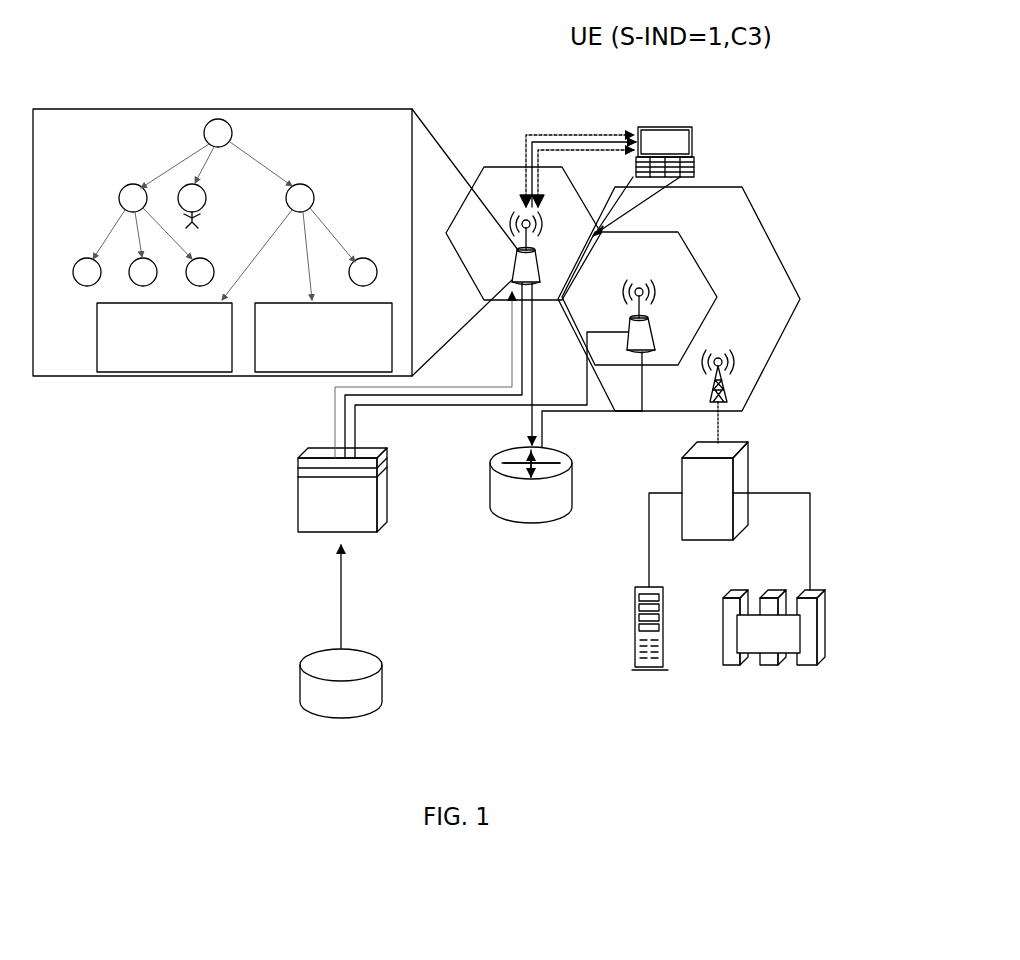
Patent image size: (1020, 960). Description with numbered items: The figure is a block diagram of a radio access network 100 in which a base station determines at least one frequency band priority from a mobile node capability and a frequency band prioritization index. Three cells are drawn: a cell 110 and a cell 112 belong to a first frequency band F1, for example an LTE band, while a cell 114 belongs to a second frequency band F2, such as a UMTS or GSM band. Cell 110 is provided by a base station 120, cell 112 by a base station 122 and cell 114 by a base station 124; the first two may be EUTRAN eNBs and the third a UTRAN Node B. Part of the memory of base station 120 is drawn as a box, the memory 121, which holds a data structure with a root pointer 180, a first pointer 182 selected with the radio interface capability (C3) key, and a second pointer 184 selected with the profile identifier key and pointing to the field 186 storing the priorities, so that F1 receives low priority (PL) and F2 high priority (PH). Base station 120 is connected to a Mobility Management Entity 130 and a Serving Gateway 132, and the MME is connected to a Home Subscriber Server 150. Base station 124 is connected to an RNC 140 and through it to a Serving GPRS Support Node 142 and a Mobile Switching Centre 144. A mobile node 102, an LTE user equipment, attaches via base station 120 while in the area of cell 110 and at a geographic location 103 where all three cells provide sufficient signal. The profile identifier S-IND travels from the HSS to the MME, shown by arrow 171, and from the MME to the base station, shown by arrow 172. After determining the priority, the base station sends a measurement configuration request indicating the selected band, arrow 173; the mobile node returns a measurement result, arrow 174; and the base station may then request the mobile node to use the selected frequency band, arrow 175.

The wireless communication system 100 is at (91, 62).
The mobile node 102 is at (665, 127).
The geographic location 103 is at (595, 240).
The cell 110 is at (456, 252).
The cell 112 is at (716, 284).
The cell 114 is at (777, 257).
The base station 120 is at (536, 262).
The memory 121 is at (412, 108).
The base station 122 is at (655, 348).
The base station 124 is at (723, 383).
The Mobility Management Entity 130 is at (381, 452).
The Serving Gateway 132 is at (574, 472).
The RNC 140 is at (750, 473).
The Serving GPRS Support Node 142 is at (655, 670).
The Mobile Switching Centre 144 is at (768, 665).
The Home Subscriber Server 150 is at (372, 652).
The arrow 171 is at (330, 612).
The arrow 172 is at (333, 417).
The arrow 173 is at (526, 162).
The arrow 174 is at (545, 141).
The arrow 175 is at (600, 150).
The root pointer 180 is at (228, 121).
The first pointer 182 is at (253, 162).
The second pointer 184 is at (305, 233).
The frequency priority assignment 186 is at (293, 378).